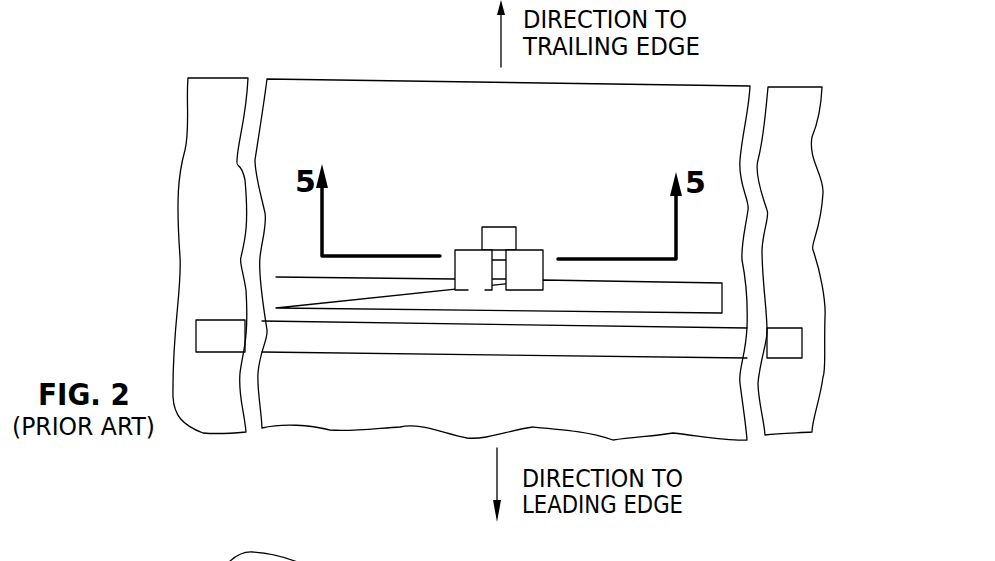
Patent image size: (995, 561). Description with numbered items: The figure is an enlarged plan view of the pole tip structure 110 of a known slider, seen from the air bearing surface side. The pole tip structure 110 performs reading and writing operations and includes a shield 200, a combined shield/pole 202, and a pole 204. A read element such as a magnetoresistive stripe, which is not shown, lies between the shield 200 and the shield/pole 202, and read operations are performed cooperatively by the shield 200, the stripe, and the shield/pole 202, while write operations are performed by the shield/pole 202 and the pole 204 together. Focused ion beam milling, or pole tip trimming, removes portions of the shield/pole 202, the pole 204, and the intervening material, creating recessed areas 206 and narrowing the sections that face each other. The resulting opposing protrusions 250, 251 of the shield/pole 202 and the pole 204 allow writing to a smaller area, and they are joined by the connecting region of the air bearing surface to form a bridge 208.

The pole tip structure 110 is at (322, 56).
The shield 200 is at (591, 345).
The combined shield/pole 202 is at (665, 305).
The pole 204 is at (488, 227).
The recessed areas 206 is at (471, 260).
The bridge 208 is at (478, 290).
The protrusion 250 is at (500, 283).
The protrusion 251 is at (499, 252).